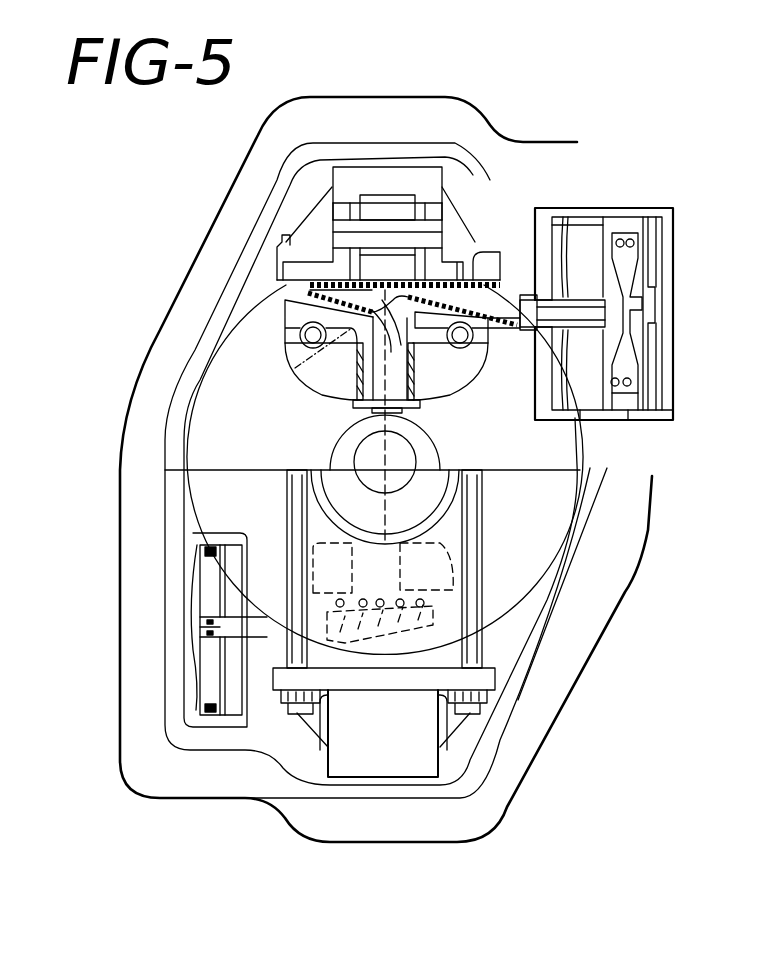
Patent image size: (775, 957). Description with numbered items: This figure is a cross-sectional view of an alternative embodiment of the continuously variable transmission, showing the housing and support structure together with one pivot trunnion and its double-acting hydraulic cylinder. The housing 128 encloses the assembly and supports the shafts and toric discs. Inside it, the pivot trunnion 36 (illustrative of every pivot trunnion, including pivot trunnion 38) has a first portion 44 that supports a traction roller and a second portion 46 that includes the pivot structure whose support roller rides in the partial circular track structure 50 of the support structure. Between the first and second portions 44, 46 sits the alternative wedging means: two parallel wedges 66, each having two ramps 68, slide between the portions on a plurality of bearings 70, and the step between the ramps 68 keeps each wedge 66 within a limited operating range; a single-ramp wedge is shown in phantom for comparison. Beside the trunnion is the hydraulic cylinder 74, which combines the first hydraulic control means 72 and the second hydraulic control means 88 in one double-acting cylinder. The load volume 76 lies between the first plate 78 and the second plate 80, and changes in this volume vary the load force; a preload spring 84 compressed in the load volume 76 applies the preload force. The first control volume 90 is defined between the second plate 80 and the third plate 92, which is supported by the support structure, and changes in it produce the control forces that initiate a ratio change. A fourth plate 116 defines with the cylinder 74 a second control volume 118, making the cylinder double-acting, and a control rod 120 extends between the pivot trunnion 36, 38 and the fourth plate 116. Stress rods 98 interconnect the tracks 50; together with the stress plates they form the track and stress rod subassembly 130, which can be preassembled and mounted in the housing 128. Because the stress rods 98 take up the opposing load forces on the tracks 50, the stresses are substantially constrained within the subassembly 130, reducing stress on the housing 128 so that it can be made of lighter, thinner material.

The housing 128 is at (416, 133).
The hydraulic cylinder 74 is at (597, 208).
The second control volume 118 is at (553, 220).
The preload spring 84 is at (622, 240).
The load volume 76 is at (636, 262).
The first control volume 90 is at (648, 290).
The second hydraulic control means 88 is at (662, 291).
The first hydraulic control means 72 is at (617, 364).
The third plate 92 is at (657, 423).
The second plate 80 is at (628, 421).
The first plate 78 is at (603, 421).
The fourth plate 116 is at (558, 421).
The control rod 120 is at (522, 338).
The bearings 70 is at (413, 255).
The first portion 44 is at (284, 315).
The pivot trunnion 36 is at (280, 275).
The ramp 68 is at (308, 285).
The second portion 46 is at (323, 252).
The wedge 66 is at (457, 288).
The pivot trunnion 38 is at (320, 560).
The stress rods 98 is at (483, 646).
The track and stress rod subassembly 130 is at (447, 720).
The track structure 50 is at (392, 758).